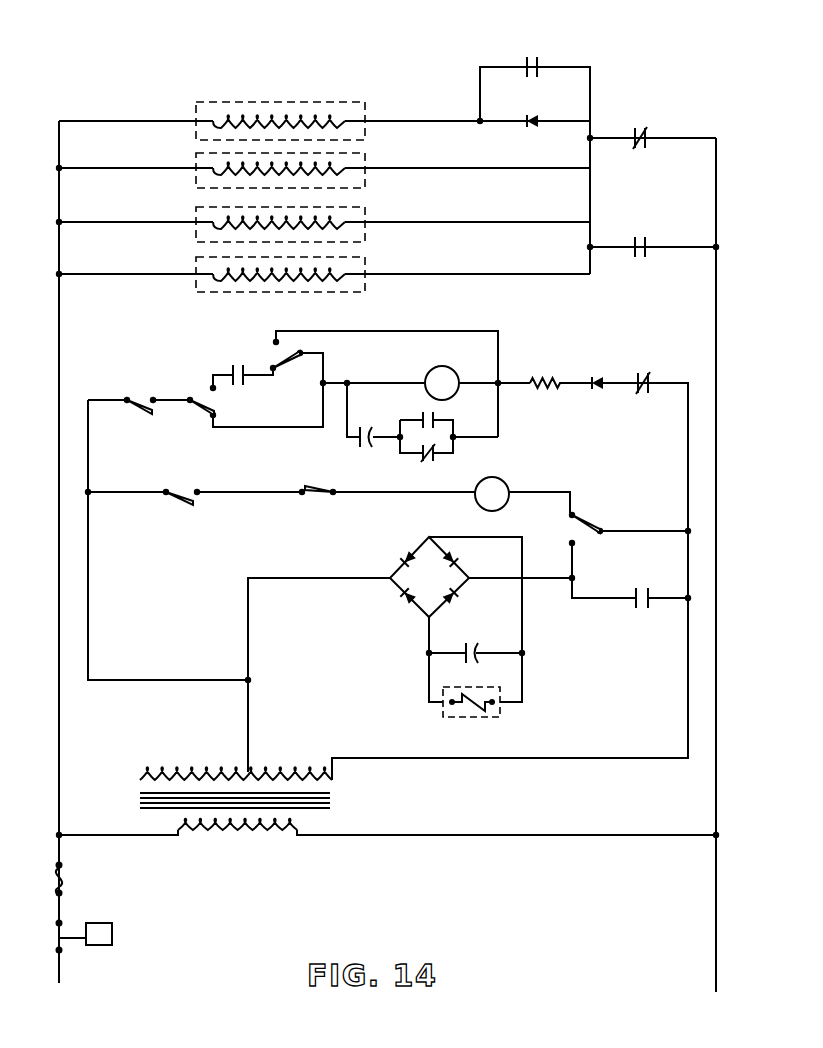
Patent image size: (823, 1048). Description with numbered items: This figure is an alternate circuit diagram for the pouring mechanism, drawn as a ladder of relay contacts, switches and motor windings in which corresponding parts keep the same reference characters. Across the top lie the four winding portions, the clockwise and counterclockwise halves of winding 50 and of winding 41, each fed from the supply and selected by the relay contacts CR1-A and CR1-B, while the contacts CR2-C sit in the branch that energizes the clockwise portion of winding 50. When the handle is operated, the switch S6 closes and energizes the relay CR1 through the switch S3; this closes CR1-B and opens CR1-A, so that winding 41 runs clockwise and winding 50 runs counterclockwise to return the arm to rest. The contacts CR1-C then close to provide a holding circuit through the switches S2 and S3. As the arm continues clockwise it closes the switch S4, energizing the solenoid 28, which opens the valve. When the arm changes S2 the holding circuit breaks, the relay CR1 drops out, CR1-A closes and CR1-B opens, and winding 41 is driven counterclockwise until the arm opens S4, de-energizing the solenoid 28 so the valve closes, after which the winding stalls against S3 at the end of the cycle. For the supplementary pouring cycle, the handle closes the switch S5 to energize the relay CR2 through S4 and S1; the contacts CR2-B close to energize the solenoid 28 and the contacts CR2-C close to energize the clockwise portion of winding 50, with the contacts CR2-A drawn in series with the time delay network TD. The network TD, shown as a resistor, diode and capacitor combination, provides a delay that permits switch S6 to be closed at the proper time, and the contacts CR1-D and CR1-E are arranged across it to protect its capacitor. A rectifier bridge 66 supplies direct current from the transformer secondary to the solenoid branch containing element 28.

The winding 50 is at (360, 91).
The winding 41 is at (375, 151).
The rectifier bridge 66 is at (413, 570).
The solenoid 28 is at (514, 719).
The contacts CR2-C is at (534, 57).
The contacts CR1-A is at (673, 107).
The contacts CR1-B is at (670, 220).
The contacts CR1-C is at (236, 363).
The contacts CR1-D is at (428, 411).
The contacts CR1-E is at (446, 443).
The relay CR1 is at (444, 354).
The relay CR2 is at (477, 500).
The contacts CR2-A is at (673, 355).
The contacts CR2-B is at (630, 575).
The time delay network TD is at (597, 399).
The switch S1 is at (321, 481).
The switch S2 is at (272, 355).
The switch S3 is at (213, 398).
The switch S4 is at (567, 534).
The switch S5 is at (186, 483).
The switch S6 is at (147, 392).